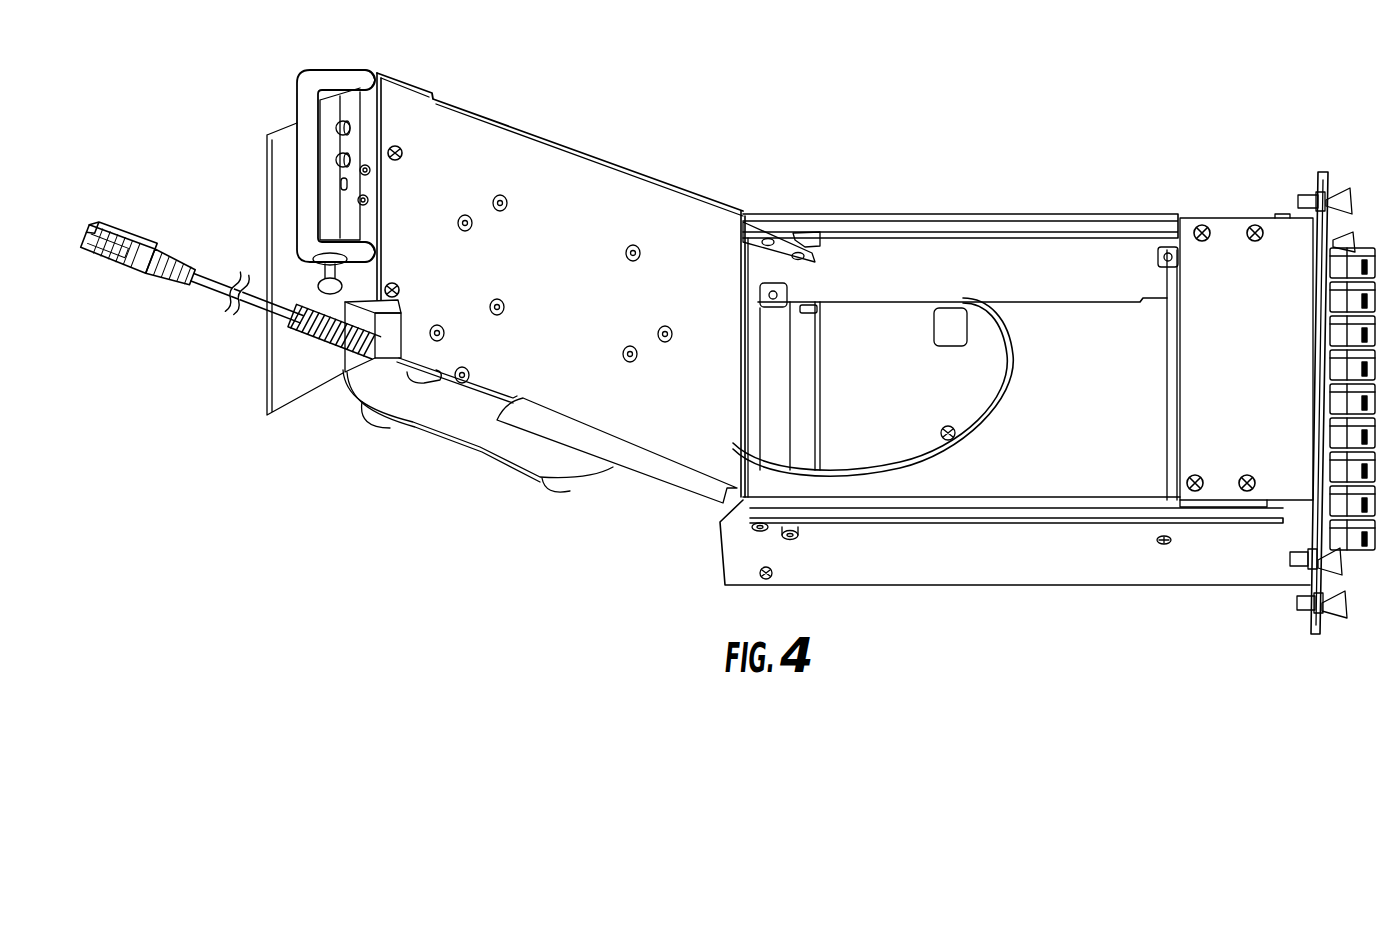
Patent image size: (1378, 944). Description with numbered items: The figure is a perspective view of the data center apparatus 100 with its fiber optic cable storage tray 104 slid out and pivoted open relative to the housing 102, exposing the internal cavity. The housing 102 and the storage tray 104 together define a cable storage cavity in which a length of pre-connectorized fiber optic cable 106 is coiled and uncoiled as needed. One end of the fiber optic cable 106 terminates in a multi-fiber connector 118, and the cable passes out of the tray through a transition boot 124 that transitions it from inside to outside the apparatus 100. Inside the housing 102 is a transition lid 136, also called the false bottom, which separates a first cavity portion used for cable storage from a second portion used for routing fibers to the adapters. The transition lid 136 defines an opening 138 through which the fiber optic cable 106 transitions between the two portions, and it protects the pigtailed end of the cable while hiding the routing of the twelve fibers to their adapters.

The data center apparatus 100 is at (1072, 122).
The housing 102 is at (1170, 563).
The fiber optic cable storage tray 104 is at (557, 142).
The pre-connectorized fiber optic cable 106 is at (232, 292).
The multi-fiber connector 118 is at (123, 263).
The transition boot 124 is at (323, 343).
The transition lid 136 is at (1025, 453).
The opening 138 is at (950, 333).